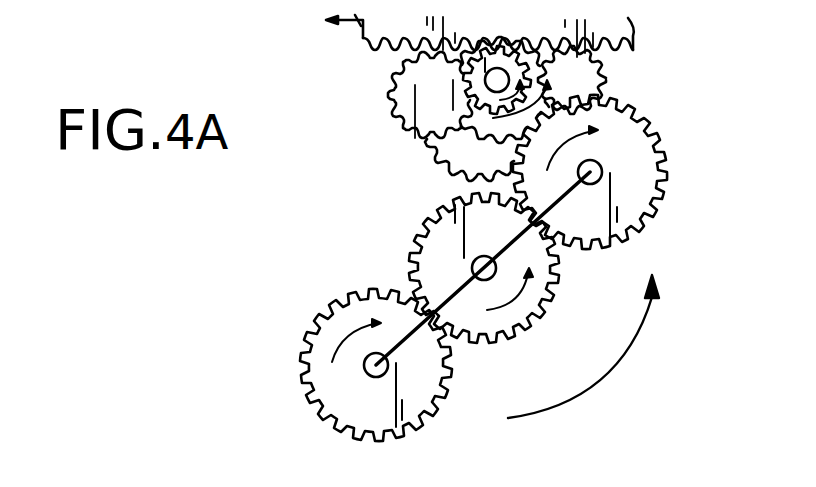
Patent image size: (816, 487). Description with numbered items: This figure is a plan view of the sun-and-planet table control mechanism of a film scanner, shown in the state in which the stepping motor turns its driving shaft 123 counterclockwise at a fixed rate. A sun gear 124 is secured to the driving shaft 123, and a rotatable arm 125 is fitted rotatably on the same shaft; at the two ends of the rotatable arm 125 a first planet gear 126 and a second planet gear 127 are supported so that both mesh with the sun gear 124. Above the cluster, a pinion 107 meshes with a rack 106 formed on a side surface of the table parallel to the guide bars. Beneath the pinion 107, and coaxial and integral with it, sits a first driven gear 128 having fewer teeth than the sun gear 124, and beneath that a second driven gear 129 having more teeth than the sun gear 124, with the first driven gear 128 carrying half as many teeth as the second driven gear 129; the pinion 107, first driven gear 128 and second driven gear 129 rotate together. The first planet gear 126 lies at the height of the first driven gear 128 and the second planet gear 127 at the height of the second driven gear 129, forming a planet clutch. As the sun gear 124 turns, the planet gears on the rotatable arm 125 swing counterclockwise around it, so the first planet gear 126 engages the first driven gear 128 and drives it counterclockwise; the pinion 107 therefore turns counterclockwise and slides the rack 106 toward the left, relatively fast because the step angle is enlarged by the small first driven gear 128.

The rack 106 is at (683, 47).
The pinion 107 is at (462, 67).
The driving shaft 123 is at (470, 259).
The sun gear 124 is at (549, 303).
The rotatable arm 125 is at (458, 296).
The first planet gear 126 is at (659, 186).
The second planet gear 127 is at (320, 387).
The first driven gear 128 is at (440, 85).
The second driven gear 129 is at (440, 158).